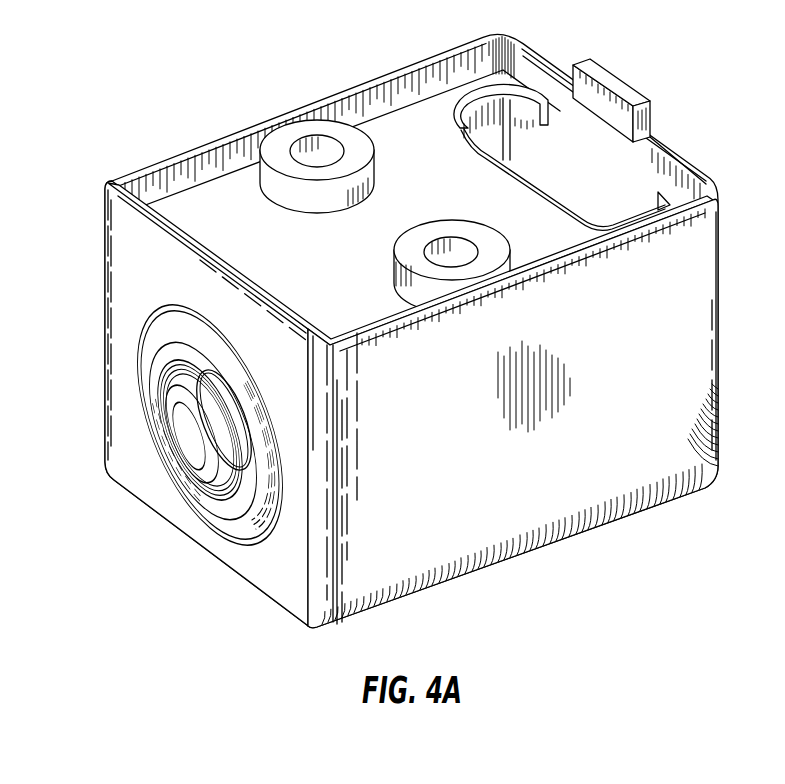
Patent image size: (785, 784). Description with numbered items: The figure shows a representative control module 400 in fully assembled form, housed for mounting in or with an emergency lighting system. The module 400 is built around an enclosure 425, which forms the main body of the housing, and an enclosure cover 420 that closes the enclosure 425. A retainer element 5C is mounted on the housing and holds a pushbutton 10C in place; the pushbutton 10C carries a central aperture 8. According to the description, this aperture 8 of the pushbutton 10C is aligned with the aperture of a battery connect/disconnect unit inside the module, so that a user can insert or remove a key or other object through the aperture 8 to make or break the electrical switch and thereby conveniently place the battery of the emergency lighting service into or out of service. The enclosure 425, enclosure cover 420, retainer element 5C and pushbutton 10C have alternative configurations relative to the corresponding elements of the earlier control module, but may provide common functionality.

The control module 400 is at (128, 48).
The enclosure cover 420 is at (137, 250).
The enclosure 425 is at (490, 474).
The retainer element 5C is at (163, 347).
The pushbutton 10C is at (163, 387).
The aperture 8 is at (183, 428).